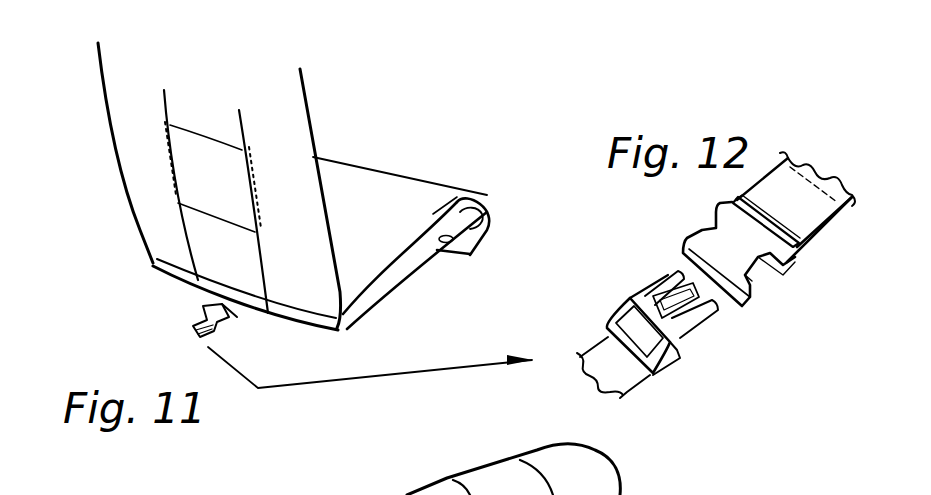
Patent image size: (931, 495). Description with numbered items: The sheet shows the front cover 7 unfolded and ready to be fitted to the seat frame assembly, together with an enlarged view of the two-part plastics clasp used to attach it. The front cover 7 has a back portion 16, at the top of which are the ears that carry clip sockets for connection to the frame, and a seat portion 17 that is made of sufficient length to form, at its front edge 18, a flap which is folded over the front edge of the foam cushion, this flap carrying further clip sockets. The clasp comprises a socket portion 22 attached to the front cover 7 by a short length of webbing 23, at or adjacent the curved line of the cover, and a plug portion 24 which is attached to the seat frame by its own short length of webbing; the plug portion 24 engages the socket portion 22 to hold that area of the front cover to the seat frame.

In FIG. 11, the front cover 7 is at (114, 166).
In FIG. 11, the back portion 16 is at (290, 157).
In FIG. 11, the seat portion 17 is at (382, 228).
In FIG. 11, the front edge 18 is at (496, 225).
In FIG. 11, the socket portion 22 is at (196, 318).
In FIG. 12, the socket portion 22 is at (793, 262).
In FIG. 11, the webbing 23 is at (237, 317).
In FIG. 12, the webbing 23 is at (800, 203).
In FIG. 12, the plug portion 24 is at (677, 367).